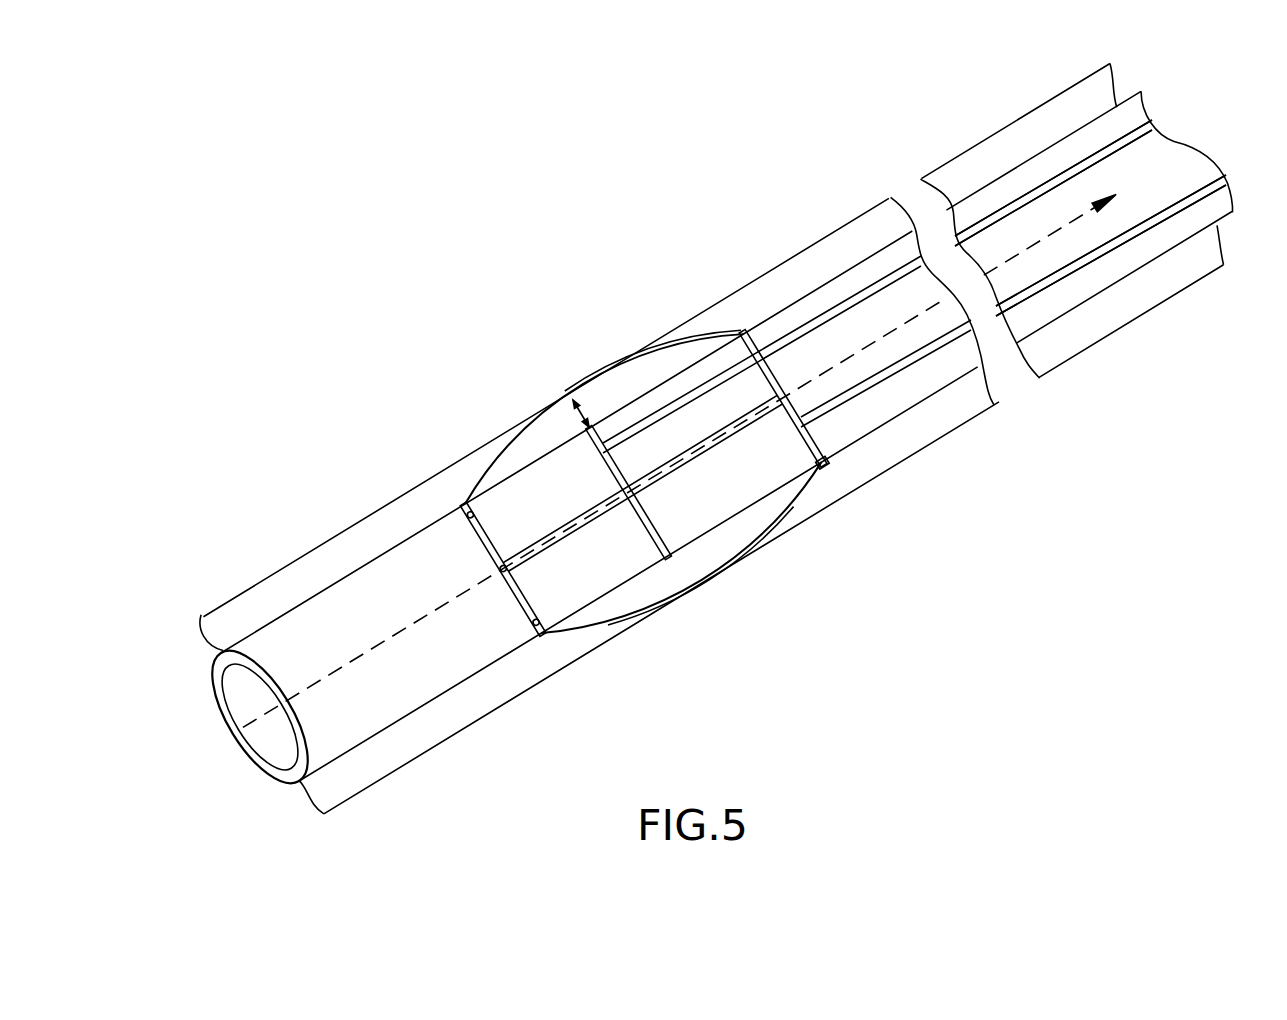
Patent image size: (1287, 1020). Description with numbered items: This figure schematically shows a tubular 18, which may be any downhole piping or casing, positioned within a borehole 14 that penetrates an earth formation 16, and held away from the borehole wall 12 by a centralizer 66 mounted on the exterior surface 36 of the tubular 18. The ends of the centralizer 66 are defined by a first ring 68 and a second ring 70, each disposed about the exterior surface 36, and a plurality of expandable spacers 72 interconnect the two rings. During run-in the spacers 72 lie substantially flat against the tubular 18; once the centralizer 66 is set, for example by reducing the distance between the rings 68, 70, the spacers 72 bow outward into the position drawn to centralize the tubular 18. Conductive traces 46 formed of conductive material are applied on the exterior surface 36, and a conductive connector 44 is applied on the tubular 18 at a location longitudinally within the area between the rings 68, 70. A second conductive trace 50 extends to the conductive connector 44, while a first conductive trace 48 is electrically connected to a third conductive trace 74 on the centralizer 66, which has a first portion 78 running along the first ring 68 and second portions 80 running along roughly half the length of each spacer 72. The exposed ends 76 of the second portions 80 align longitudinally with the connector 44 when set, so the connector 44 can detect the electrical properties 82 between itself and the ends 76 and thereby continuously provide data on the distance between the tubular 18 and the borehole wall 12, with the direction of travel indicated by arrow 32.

The borehole wall 12 is at (480, 710).
The borehole 14 is at (430, 752).
The earth formation 16 is at (432, 381).
The tubular 18 is at (355, 748).
The distal direction 32 is at (190, 761).
The exterior surface 36 is at (381, 588).
The conductive connector 44 is at (647, 535).
The conductive traces 46 is at (1043, 185).
The first conductive trace 48 is at (897, 380).
The second conductive trace 50 is at (862, 292).
The centralizer 66 is at (568, 632).
The first ring 68 is at (748, 332).
The second ring 70 is at (463, 512).
The expandable spacers 72 is at (510, 455).
The third conductive trace 74 is at (830, 470).
The ends 76 is at (585, 393).
The first portion 78 is at (798, 395).
The second portions 80 is at (647, 352).
The electrical properties 82 is at (580, 413).